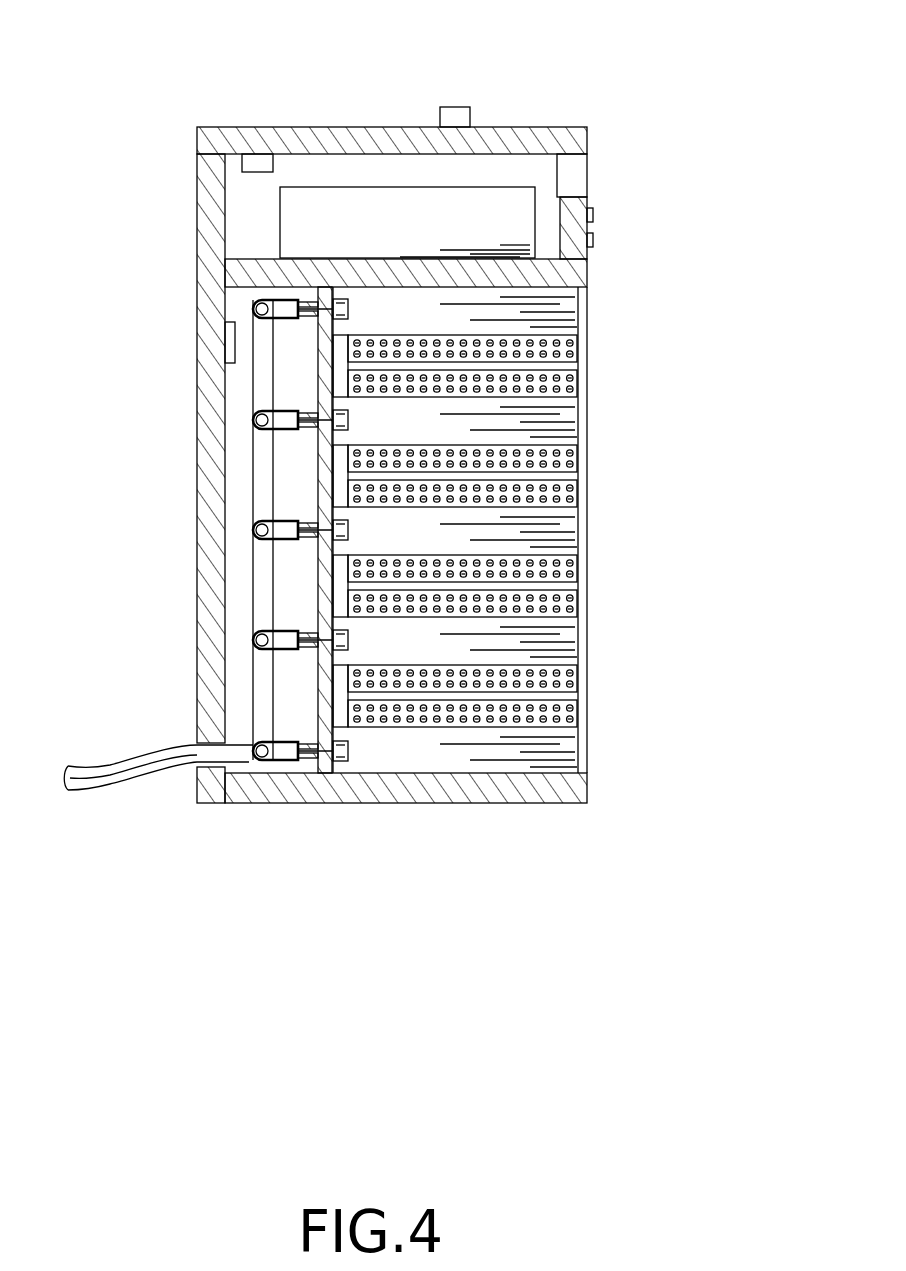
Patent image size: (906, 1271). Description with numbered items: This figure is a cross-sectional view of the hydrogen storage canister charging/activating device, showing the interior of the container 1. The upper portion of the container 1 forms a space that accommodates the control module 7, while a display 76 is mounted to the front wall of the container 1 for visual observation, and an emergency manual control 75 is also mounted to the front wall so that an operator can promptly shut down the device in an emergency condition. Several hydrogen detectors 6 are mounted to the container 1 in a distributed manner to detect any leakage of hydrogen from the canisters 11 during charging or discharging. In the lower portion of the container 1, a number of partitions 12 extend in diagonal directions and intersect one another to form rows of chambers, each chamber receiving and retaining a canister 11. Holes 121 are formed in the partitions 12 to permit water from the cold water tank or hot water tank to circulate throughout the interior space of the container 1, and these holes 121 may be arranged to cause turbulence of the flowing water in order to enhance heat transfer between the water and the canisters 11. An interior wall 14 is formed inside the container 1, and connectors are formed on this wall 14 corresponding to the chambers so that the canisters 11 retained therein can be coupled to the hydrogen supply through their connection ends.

The container 1 is at (377, 150).
The hydrogen detector 6 is at (453, 117).
The control module 7 is at (308, 190).
The canister 11 is at (534, 532).
The partition 12 is at (534, 512).
The hole 121 is at (577, 377).
The interior wall 14 is at (313, 477).
The emergency manual control 75 is at (592, 220).
The display 76 is at (588, 167).